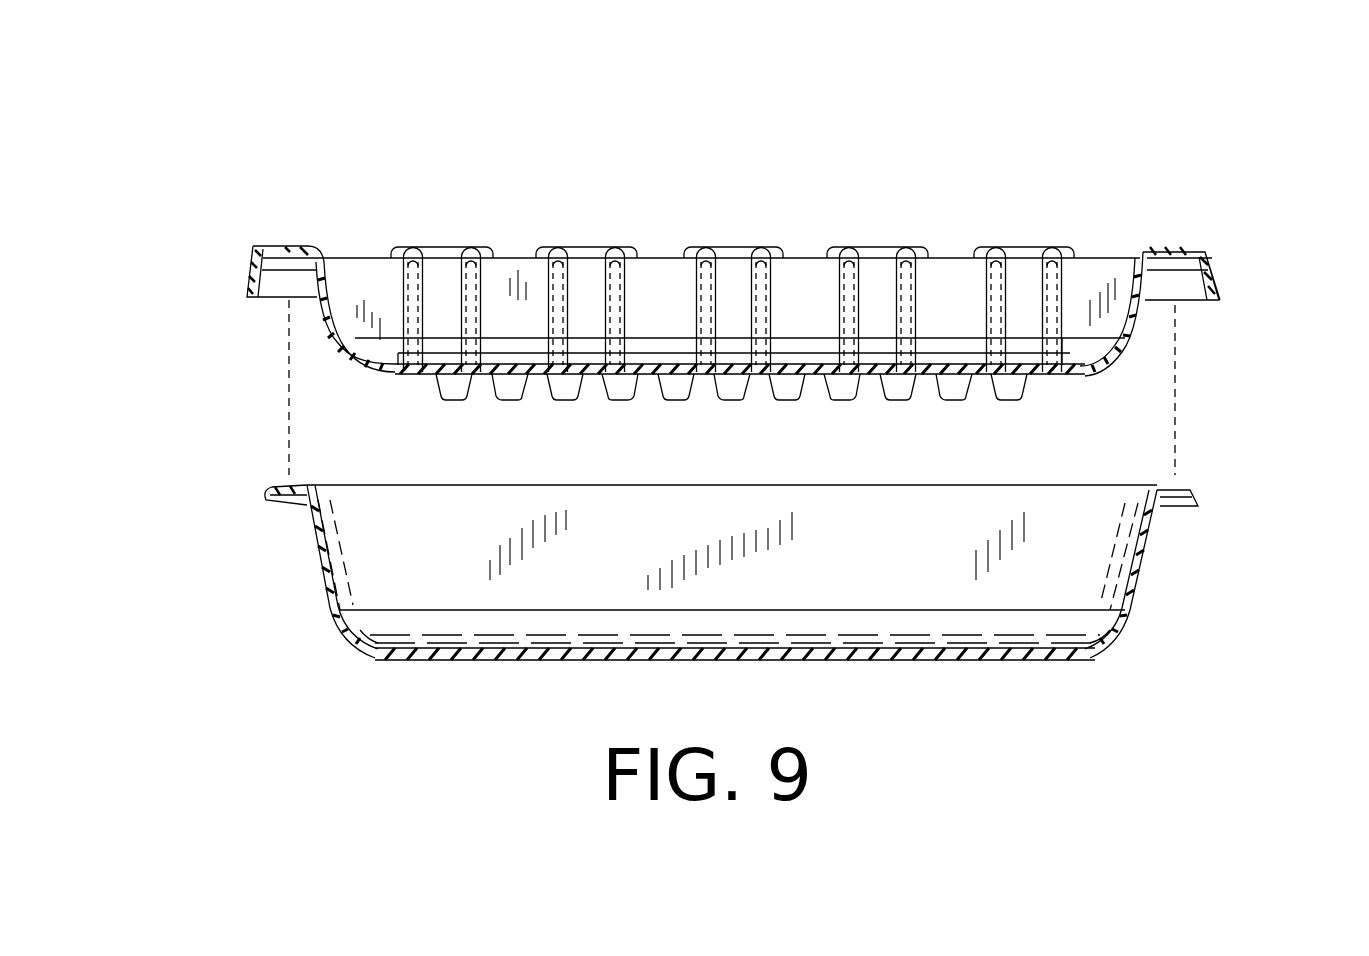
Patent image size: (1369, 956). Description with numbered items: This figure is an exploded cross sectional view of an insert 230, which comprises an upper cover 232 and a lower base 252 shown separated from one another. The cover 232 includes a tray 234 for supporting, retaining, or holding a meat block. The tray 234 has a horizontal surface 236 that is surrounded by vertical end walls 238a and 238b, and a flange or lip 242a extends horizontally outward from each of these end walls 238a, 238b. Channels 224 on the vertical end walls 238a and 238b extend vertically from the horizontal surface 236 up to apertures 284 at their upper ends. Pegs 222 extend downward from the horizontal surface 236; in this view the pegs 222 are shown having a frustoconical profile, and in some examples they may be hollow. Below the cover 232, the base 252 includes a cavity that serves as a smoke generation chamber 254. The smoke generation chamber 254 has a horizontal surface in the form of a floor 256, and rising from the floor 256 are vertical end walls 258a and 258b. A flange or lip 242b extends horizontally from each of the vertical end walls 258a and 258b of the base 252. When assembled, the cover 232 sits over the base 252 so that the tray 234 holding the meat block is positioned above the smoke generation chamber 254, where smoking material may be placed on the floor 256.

The insert 230 is at (272, 137).
The cover 232 is at (232, 247).
The tray 234 is at (428, 244).
The channels 224 is at (545, 290).
The apertures 284 is at (732, 246).
The horizontal surface 236 is at (800, 362).
The vertical end wall 238a is at (1150, 323).
The vertical end wall 238b is at (316, 320).
The flange or lip 242a is at (1206, 243).
The flange or lip 242b is at (283, 485).
The pegs 222 is at (495, 388).
The base 252 is at (1135, 660).
The smoke generation chamber 254 is at (412, 580).
The floor 256 is at (1000, 662).
The vertical end wall 258a is at (1148, 600).
The vertical end wall 258b is at (316, 590).